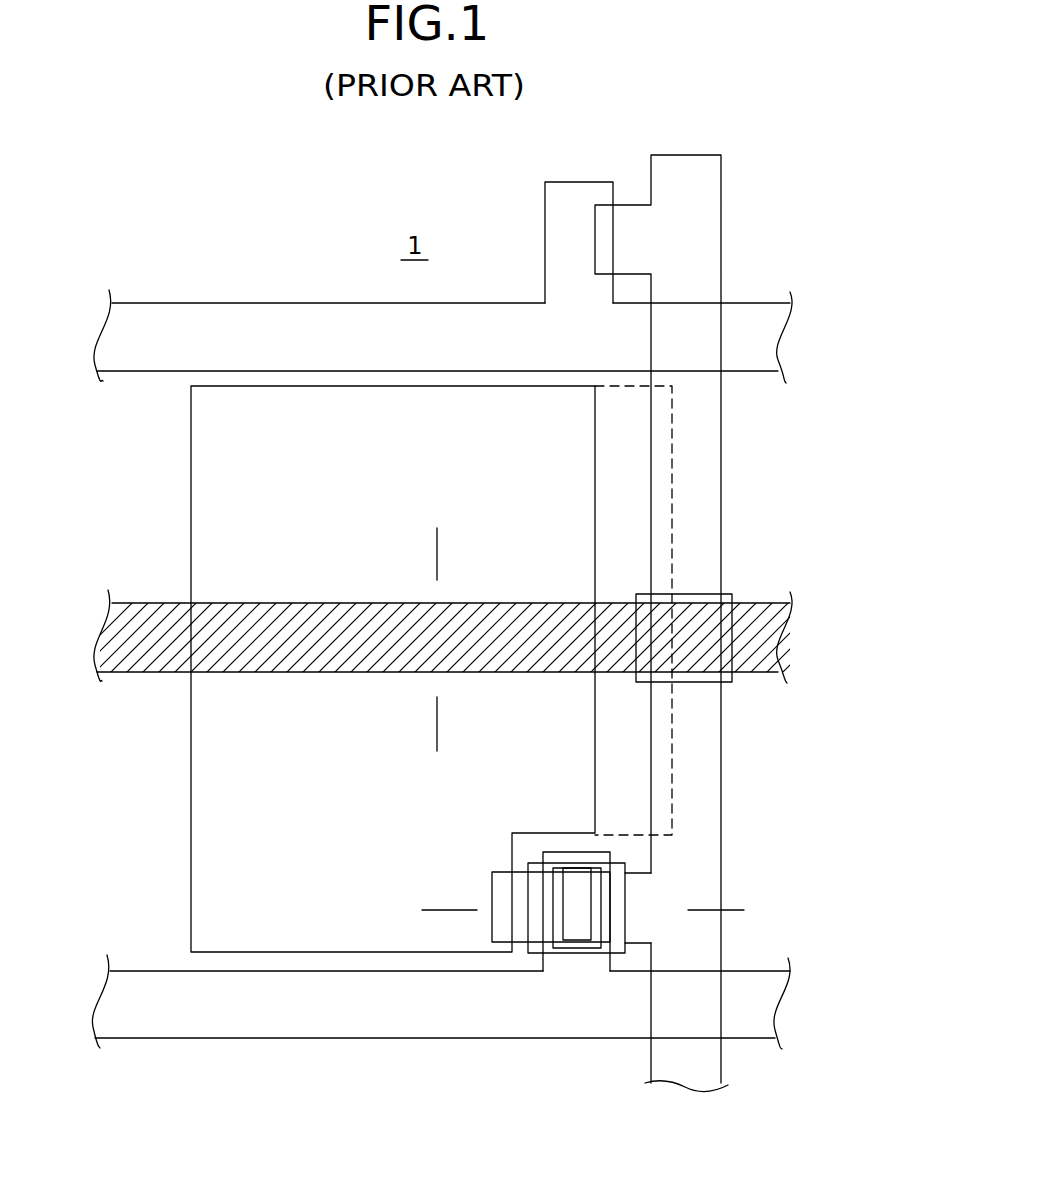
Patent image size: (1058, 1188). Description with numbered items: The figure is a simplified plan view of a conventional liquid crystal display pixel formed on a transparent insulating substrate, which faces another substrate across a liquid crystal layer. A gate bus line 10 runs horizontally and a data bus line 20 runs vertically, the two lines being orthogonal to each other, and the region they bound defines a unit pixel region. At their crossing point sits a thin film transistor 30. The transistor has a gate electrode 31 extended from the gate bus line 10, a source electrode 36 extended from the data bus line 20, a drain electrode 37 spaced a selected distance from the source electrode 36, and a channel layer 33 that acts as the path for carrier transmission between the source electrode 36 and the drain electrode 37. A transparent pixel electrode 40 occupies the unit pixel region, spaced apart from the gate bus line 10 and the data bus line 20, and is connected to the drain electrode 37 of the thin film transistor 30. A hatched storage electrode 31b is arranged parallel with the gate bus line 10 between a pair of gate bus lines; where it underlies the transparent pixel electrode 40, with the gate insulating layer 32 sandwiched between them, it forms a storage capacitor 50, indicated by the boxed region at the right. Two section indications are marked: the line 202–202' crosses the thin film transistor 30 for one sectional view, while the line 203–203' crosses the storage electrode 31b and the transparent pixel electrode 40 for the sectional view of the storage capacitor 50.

The gate bus line 10 is at (753, 1000).
The data bus line 20 is at (705, 752).
The thin film transistor 30 is at (640, 851).
The gate electrode 31 is at (570, 857).
The storage electrode 31b is at (777, 628).
The gate insulating layer 32 is at (549, 950).
The channel layer 33 is at (577, 935).
The source electrode 36 is at (622, 908).
The drain electrode 37 is at (498, 927).
The transparent pixel electrode 40 is at (212, 807).
The storage capacitor 50 is at (762, 590).
The section line 202 is at (437, 869).
The section line 202' is at (733, 863).
The section line 203 is at (384, 548).
The section line 203' is at (384, 732).